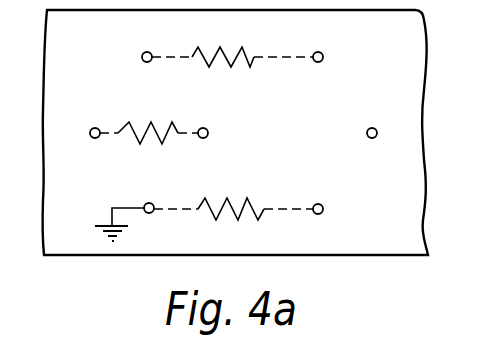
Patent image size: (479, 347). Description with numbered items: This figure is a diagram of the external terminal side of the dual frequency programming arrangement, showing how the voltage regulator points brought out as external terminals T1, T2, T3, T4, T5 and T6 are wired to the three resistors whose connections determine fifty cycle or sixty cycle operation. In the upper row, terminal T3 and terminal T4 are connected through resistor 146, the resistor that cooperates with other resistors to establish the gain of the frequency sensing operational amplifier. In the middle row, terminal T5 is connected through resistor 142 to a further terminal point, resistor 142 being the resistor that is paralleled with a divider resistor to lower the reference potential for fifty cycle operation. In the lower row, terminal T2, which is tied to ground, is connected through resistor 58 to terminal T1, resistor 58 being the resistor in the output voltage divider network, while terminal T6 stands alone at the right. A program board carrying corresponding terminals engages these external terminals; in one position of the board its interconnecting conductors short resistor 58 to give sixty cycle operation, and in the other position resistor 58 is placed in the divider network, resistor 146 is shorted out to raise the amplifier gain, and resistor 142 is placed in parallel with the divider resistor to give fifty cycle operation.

The external terminal T1 is at (318, 204).
The external terminal T2 is at (153, 212).
The external terminal T3 is at (143, 53).
The external terminal T4 is at (322, 61).
The external terminal T5 is at (93, 129).
The external terminal T6 is at (370, 138).
The resistor 146 is at (237, 68).
The resistor 142 is at (147, 143).
The resistor 58 is at (240, 197).